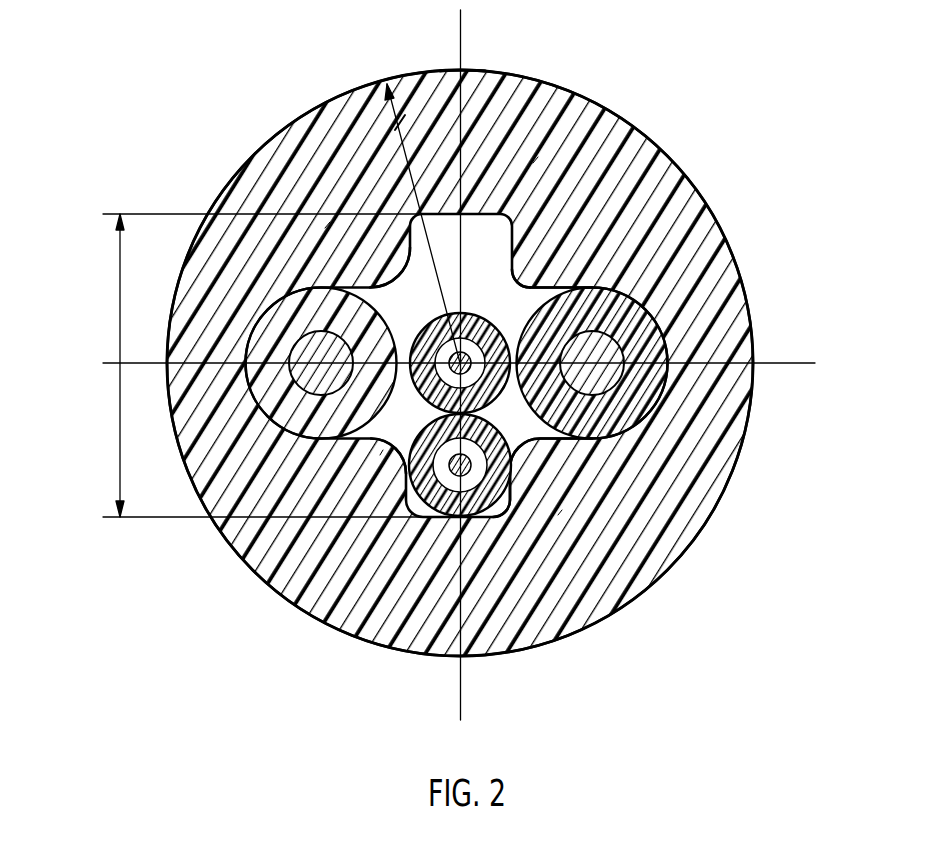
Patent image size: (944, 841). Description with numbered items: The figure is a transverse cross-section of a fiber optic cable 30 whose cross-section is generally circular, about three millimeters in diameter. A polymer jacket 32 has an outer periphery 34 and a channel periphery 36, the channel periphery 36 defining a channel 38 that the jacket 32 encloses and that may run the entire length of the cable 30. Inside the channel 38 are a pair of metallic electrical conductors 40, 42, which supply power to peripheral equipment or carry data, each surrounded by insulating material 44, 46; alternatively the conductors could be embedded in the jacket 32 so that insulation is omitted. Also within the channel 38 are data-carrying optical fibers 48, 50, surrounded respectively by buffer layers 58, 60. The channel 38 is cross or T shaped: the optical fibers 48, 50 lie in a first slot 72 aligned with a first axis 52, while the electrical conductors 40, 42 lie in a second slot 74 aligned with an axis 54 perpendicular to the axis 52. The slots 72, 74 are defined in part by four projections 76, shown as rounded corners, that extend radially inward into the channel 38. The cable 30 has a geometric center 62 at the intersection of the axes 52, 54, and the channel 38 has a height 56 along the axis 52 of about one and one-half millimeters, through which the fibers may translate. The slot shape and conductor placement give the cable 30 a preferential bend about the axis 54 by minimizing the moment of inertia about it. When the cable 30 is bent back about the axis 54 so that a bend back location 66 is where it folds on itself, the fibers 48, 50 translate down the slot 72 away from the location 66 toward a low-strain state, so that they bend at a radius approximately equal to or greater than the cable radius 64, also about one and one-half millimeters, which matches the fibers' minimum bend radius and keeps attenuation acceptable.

The fiber optic cable 30 is at (503, 363).
The polymer jacket 32 is at (717, 333).
The outer periphery 34 is at (655, 148).
The channel periphery 36 is at (373, 277).
The channel 38 is at (527, 253).
The electrical conductor 40 is at (660, 452).
The electrical conductor 42 is at (318, 395).
The insulating material 44 is at (668, 393).
The insulating material 46 is at (264, 438).
The optical fiber 48 is at (437, 482).
The optical fiber 50 is at (605, 280).
The first axis 52 is at (462, 42).
The axis 54 is at (777, 365).
The height 56 is at (120, 276).
The buffer layer 58 is at (477, 562).
The buffer layer 60 is at (382, 455).
The geometric center 62 is at (530, 468).
The cable radius 64 is at (400, 133).
The bend back location 66 is at (463, 72).
The first slot 72 is at (417, 200).
The second slot 74 is at (463, 352).
The projections 76 is at (325, 228).